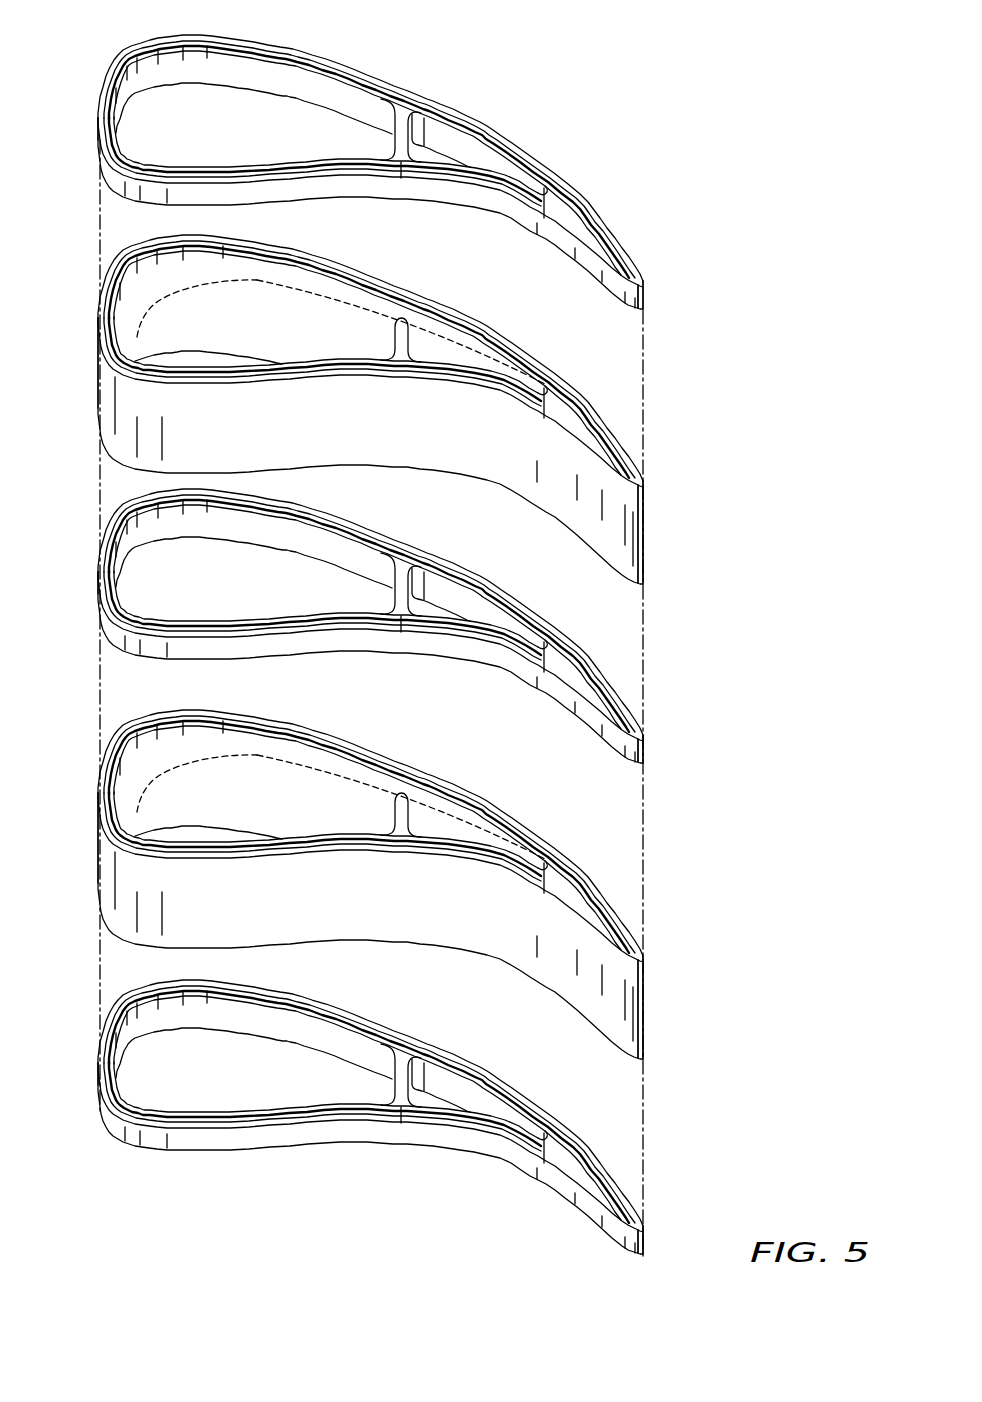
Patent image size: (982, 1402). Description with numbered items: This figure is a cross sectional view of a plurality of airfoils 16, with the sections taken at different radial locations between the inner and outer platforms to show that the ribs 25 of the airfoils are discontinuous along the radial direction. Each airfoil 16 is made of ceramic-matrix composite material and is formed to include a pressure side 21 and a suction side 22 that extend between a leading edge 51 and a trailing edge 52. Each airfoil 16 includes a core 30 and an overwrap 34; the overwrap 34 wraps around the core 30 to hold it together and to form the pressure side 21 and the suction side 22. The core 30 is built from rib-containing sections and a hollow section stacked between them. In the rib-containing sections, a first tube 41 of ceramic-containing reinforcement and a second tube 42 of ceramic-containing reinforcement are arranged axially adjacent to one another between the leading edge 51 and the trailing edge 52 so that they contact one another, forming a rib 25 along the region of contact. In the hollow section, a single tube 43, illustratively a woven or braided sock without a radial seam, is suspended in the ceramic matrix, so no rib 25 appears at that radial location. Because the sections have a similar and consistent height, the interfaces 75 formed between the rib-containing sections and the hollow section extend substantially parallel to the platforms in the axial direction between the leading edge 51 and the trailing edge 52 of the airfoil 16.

The airfoil 16 is at (655, 216).
The pressure side 21 is at (383, 186).
The suction side 22 is at (412, 74).
The ribs 25 is at (394, 117).
The core 30 is at (550, 190).
The overwrap 34 is at (130, 50).
The first tube 41 is at (258, 152).
The second tube 42 is at (452, 164).
The tube 43 is at (318, 292).
The leading edge 51 is at (97, 130).
The trailing edge 52 is at (650, 292).
The interfaces 75 is at (148, 302).